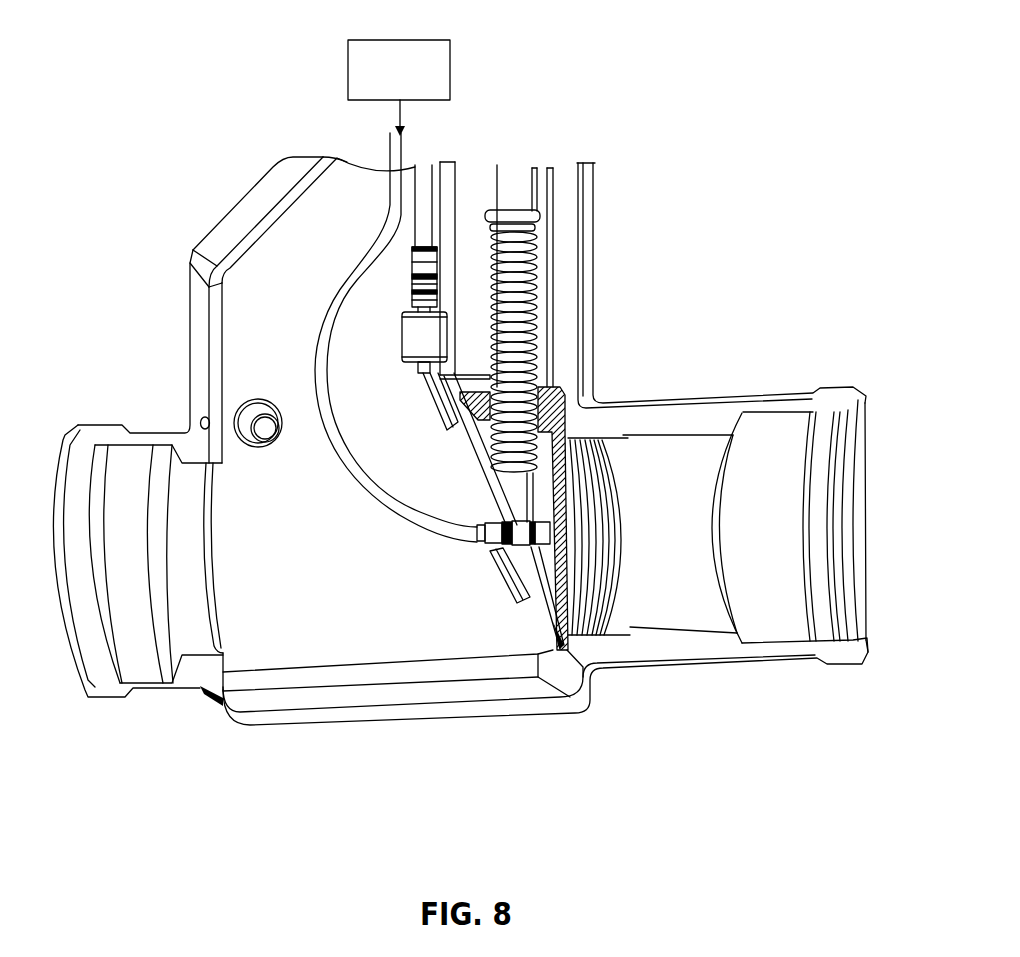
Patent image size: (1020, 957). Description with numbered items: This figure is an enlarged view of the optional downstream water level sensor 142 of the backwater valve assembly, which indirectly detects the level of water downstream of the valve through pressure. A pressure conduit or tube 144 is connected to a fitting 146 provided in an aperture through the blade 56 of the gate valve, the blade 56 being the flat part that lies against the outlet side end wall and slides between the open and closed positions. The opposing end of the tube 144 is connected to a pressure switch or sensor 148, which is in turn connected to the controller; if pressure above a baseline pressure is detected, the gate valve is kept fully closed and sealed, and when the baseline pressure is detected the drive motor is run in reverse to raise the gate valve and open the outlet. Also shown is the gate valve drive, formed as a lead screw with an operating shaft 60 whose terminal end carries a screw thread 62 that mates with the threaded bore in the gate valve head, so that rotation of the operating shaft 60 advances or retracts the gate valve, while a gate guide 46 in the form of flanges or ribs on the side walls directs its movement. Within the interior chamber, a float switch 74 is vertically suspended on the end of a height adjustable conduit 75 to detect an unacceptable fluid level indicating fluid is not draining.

The downstream water level sensor 142 is at (682, 98).
The pressure switch or sensor 148 is at (415, 68).
The pressure conduit or tube 144 is at (403, 520).
The height adjustable conduit 75 is at (423, 208).
The float switch 74 is at (420, 335).
The operating shaft 60 is at (519, 193).
The screw thread 62 is at (533, 275).
The gate guide 46 is at (553, 385).
The fitting 146 is at (543, 550).
The blade 56 is at (550, 620).